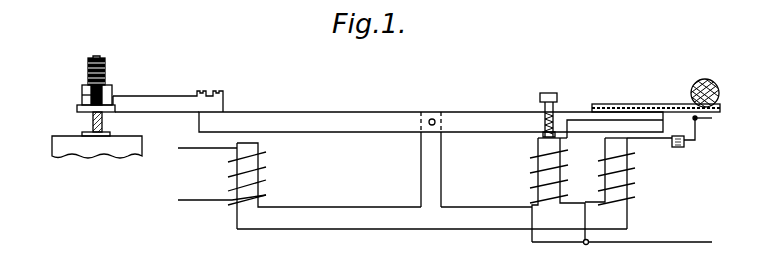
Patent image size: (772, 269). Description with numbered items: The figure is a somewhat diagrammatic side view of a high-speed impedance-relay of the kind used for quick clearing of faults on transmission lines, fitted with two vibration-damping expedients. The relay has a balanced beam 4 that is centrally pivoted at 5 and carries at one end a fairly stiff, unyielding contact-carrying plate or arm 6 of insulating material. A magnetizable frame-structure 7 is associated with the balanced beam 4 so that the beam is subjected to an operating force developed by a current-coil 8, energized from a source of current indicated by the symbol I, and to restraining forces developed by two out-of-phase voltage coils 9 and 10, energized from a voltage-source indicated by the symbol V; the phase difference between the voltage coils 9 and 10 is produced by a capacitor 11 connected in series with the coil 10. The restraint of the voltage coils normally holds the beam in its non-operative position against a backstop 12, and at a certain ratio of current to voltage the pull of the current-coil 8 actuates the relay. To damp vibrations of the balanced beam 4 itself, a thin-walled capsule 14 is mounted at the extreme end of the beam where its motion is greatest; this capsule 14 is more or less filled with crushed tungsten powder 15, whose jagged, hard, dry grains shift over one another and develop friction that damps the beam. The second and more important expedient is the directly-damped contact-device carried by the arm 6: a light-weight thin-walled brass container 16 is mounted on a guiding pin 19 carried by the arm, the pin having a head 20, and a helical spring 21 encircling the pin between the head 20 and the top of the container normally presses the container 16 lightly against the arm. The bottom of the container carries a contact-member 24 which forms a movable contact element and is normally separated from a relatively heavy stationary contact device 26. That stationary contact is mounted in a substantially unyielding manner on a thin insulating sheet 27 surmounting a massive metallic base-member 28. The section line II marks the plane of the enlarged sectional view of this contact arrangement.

The balanced beam 4 is at (505, 111).
The pivot 5 is at (429, 125).
The contact-carrying plate or arm 6 is at (150, 98).
The magnetizable frame-structure 7 is at (378, 231).
The current-coil 8 is at (267, 167).
The voltage coil 9 is at (528, 165).
The voltage coil 10 is at (638, 198).
The capacitor 11 is at (682, 149).
The backstop 12 is at (551, 93).
The thin-walled capsule 14 is at (705, 79).
The crushed tungsten powder 15 is at (720, 96).
The capsule or container 16 is at (82, 90).
The guiding pin 19 is at (82, 95).
The head 20 is at (92, 61).
The helical spring 21 is at (92, 70).
The contact-member 24 is at (106, 107).
The stationary contact device 26 is at (93, 120).
The thin insulating sheet 27 is at (82, 137).
The massive metallic base-member 28 is at (52, 150).
The source of current I is at (178, 147).
The section line II- II is at (97, 183).
The voltage-source V is at (712, 118).